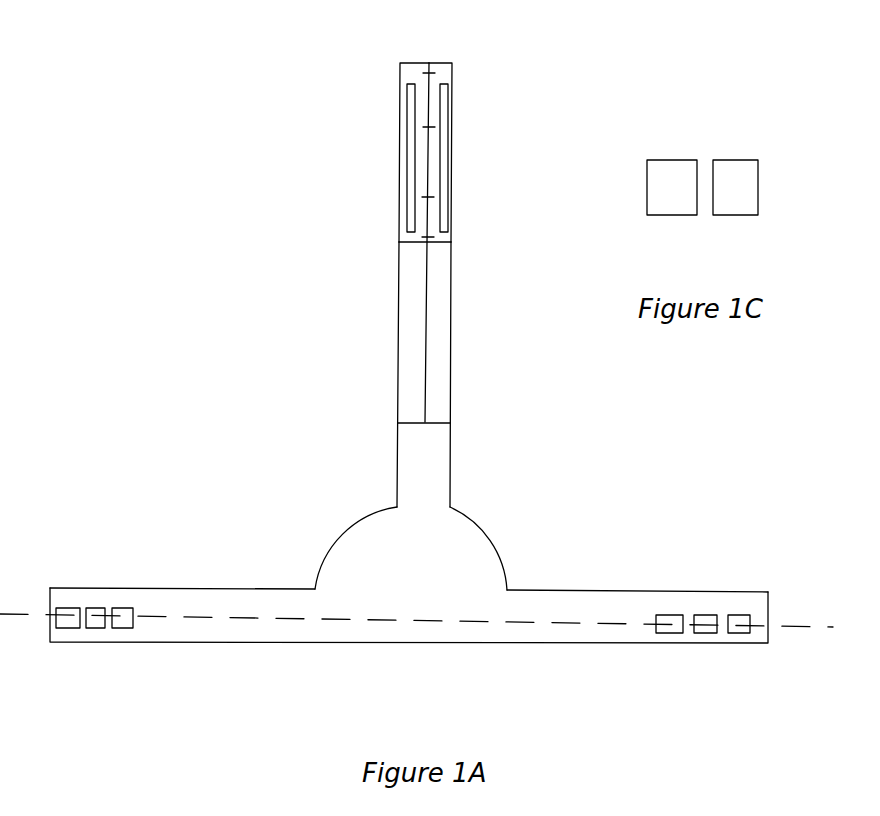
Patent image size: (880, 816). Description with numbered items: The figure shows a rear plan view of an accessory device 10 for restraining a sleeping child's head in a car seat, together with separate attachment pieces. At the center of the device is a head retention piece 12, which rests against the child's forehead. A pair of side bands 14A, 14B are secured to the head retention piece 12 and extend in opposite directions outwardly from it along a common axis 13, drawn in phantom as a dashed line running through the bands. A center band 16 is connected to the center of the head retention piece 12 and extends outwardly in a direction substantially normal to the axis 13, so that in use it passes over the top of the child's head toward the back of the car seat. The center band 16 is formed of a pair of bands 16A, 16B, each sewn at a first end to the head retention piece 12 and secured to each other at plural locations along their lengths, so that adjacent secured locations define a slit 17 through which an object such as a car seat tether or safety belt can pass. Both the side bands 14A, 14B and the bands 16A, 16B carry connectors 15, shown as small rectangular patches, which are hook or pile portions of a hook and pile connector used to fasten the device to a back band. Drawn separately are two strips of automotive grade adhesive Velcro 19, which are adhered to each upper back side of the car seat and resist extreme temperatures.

In FIG. 1A, the accessory device 10 is at (262, 668).
In FIG. 1A, the head retention piece 12 is at (464, 543).
In FIG. 1A, the common axis 13 is at (425, 622).
In FIG. 1A, the side band 14A is at (183, 592).
In FIG. 1A, the side band 14B is at (586, 601).
In FIG. 1A, the connectors 15 is at (412, 85).
In FIG. 1A, the center band 16 is at (366, 308).
In FIG. 1A, the band 16A is at (412, 67).
In FIG. 1A, the band 16B is at (449, 69).
In FIG. 1A, the slit 17 is at (428, 168).
In FIG. 1C, the automotive grade adhesive Velcro 19 is at (697, 215).